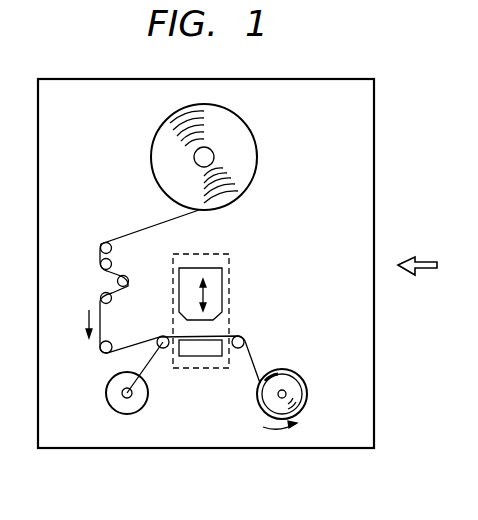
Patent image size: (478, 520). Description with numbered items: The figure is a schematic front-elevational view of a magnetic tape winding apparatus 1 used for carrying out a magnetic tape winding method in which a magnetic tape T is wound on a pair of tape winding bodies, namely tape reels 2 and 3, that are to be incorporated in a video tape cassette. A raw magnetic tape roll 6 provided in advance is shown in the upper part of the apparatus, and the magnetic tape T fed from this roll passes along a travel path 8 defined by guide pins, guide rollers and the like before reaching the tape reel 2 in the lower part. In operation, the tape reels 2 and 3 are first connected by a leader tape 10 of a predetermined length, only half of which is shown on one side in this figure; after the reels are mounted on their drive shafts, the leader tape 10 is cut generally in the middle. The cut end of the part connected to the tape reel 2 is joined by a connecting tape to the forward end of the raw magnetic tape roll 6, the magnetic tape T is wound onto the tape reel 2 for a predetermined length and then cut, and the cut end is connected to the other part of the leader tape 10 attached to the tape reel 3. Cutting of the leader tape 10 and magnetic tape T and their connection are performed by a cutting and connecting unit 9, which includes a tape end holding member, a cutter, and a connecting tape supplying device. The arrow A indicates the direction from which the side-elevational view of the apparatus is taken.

The magnetic tape winding apparatus 1 is at (382, 98).
The tape reel 2 is at (302, 380).
The tape reel 3 is at (110, 381).
The raw magnetic tape roll 6 is at (257, 143).
The travel path 8 is at (97, 253).
The cutting and connecting unit 9 is at (229, 294).
The leader tape 10 is at (145, 362).
The magnetic tape T is at (132, 232).
The arrow A is at (424, 267).